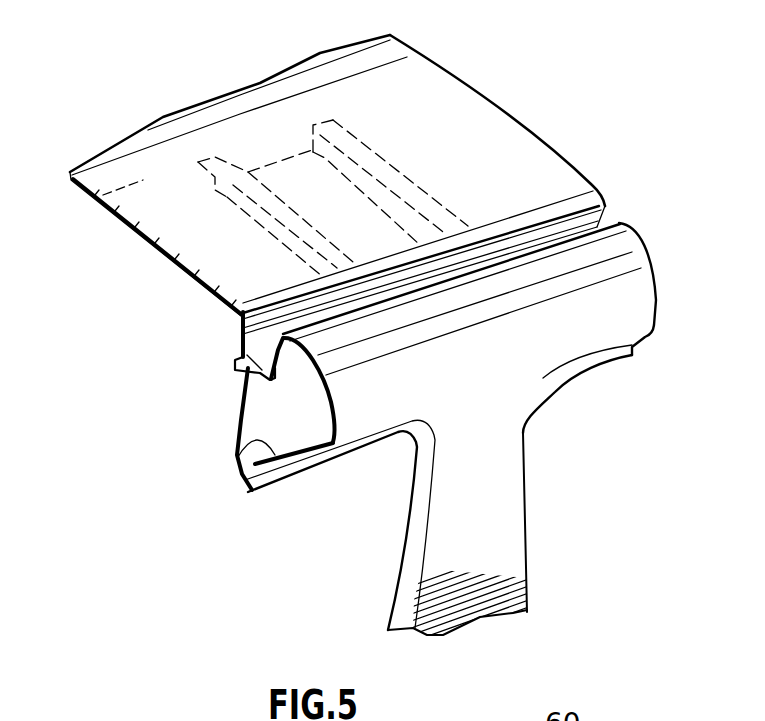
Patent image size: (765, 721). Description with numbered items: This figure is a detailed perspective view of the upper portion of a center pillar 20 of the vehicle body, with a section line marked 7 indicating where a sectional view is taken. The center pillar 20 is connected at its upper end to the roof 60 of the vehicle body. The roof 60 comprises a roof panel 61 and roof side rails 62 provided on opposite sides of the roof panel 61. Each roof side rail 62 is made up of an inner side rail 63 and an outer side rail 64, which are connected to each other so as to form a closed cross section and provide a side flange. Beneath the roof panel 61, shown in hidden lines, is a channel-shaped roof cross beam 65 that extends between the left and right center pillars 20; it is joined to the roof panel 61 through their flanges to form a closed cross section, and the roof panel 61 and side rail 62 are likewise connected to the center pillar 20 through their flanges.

The roof 60 is at (556, 119).
The roof panel 61 is at (479, 92).
The roof cross beam 65 is at (397, 170).
The center pillar 20 is at (530, 518).
The roof side rail 62 is at (163, 420).
The inner side rail 63 is at (243, 405).
The outer side rail 64 is at (237, 455).
The section line 7- 7 is at (223, 92).